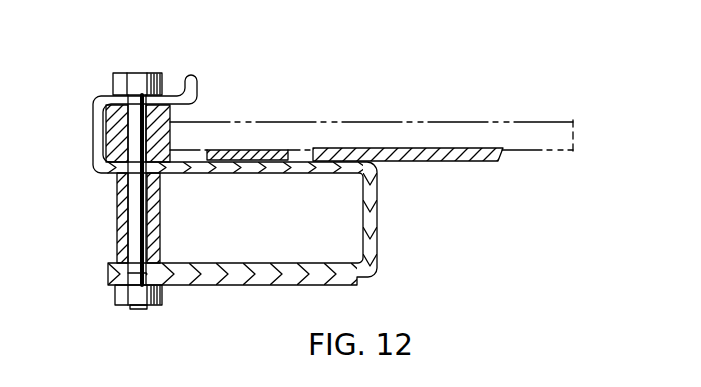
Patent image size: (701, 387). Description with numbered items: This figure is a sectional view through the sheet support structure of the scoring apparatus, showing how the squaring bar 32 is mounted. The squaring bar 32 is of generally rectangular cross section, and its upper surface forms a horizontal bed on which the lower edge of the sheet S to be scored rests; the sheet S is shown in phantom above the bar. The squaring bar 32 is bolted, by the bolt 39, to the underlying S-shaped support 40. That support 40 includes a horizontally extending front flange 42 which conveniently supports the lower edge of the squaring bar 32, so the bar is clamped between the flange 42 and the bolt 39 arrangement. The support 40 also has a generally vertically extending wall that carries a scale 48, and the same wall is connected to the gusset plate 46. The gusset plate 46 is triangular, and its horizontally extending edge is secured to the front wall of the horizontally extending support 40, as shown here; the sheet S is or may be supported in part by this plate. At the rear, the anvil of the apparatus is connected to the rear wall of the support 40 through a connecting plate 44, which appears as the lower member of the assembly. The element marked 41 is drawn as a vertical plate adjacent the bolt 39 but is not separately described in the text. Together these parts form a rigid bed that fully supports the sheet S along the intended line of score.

The bolt 39 is at (141, 78).
The front flange 42 is at (92, 127).
The squaring bar 32 is at (168, 118).
The vertical plate 41 is at (117, 213).
The S-shaped support 40 is at (377, 221).
The connecting plate 44 is at (226, 286).
The gusset plate 46 is at (472, 157).
The scale 48 is at (263, 150).
The sheet S is at (432, 122).